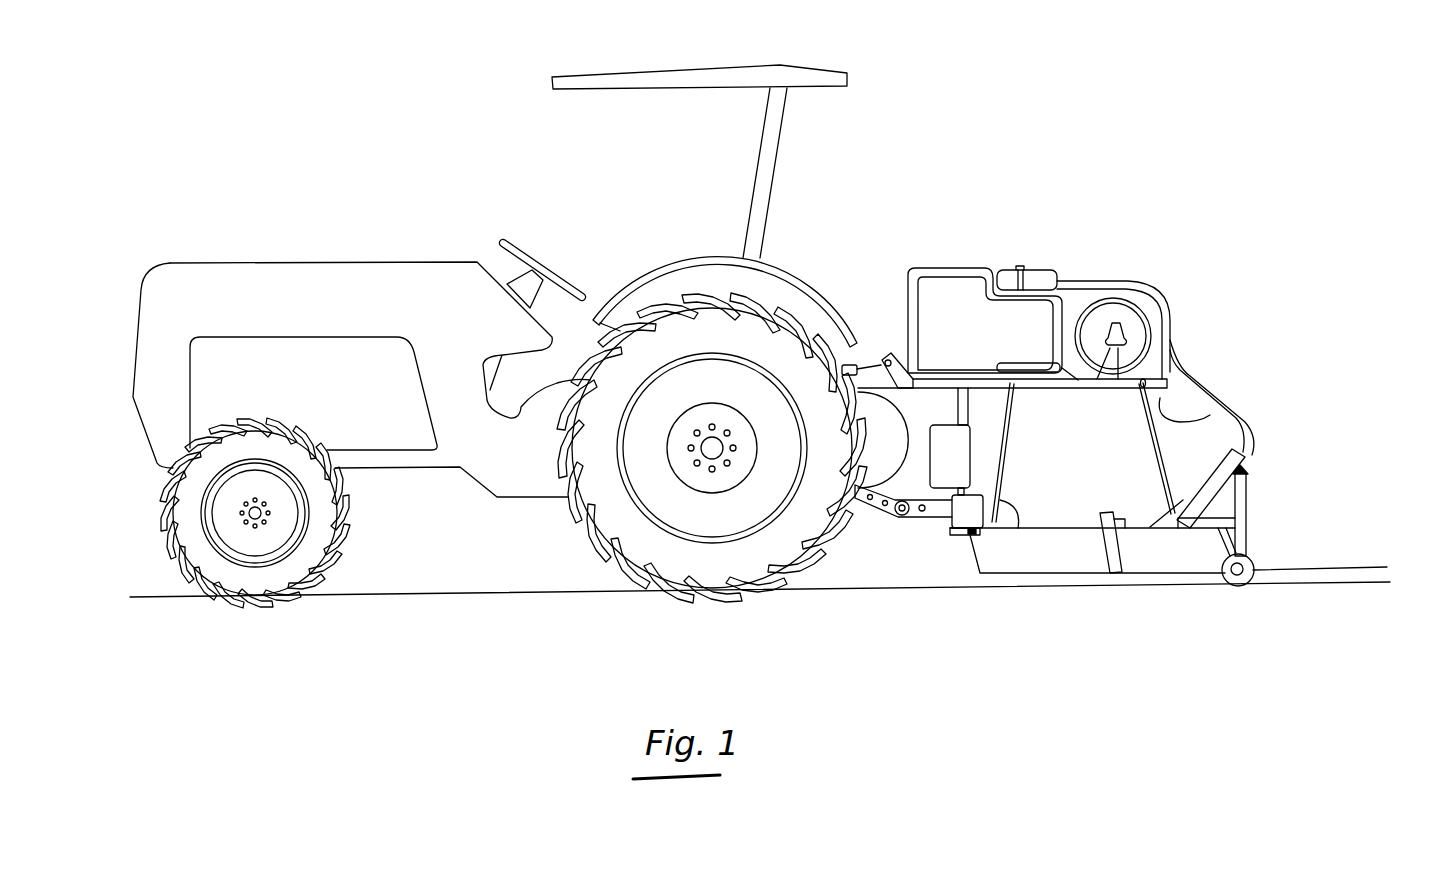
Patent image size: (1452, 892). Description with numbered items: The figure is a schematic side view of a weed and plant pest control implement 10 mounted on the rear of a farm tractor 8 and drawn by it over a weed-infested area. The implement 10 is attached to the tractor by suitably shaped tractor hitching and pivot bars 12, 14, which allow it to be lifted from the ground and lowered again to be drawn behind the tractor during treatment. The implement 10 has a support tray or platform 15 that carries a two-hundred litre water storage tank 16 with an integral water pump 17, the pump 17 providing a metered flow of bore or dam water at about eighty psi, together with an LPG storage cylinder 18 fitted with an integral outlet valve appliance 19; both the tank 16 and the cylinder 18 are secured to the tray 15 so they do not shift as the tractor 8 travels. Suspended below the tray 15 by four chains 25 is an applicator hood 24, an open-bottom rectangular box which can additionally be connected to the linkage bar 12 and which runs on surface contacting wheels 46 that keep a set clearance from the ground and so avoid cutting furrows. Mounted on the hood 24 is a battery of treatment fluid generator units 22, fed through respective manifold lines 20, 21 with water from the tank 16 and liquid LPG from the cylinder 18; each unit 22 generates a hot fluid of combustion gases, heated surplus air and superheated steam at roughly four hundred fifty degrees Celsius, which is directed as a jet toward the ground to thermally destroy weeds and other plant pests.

The farm tractor 8 is at (420, 232).
The weed and plant pest control implement 10 is at (1262, 348).
The tractor hitching and pivot bar 12 is at (898, 518).
The tractor hitching and pivot bar 14 is at (903, 353).
The support tray or platform 15 is at (1037, 390).
The water storage tank 16 is at (958, 288).
The water pump 17 is at (1038, 278).
The LPG storage cylinder 18 is at (1133, 327).
The outlet valve appliance 19 is at (1107, 350).
The manifold line 20 is at (1180, 342).
The manifold line 21 is at (1188, 420).
The treatment fluid generator unit 22 is at (1262, 465).
The applicator hood 24 is at (1097, 567).
The chain 25 is at (1018, 528).
The surface contacting wheel 46 is at (1248, 582).